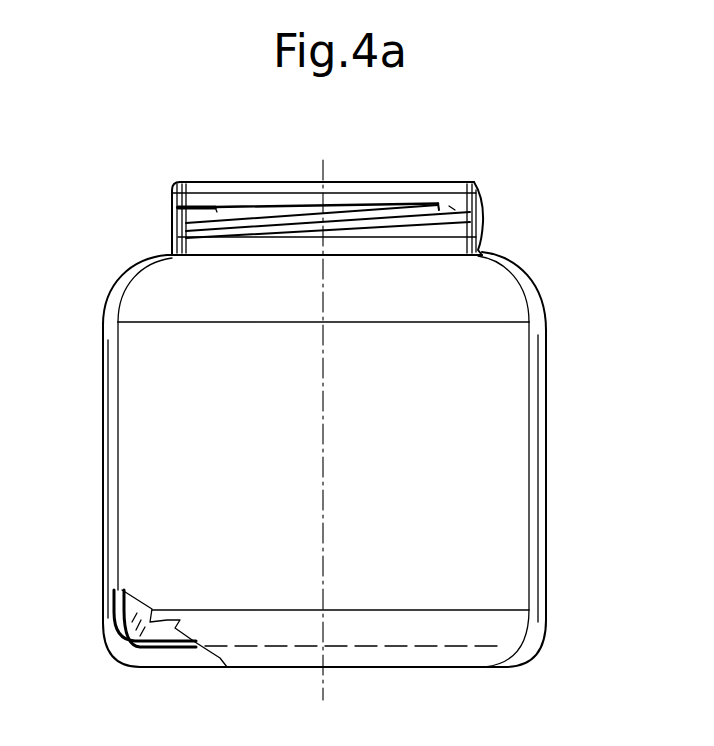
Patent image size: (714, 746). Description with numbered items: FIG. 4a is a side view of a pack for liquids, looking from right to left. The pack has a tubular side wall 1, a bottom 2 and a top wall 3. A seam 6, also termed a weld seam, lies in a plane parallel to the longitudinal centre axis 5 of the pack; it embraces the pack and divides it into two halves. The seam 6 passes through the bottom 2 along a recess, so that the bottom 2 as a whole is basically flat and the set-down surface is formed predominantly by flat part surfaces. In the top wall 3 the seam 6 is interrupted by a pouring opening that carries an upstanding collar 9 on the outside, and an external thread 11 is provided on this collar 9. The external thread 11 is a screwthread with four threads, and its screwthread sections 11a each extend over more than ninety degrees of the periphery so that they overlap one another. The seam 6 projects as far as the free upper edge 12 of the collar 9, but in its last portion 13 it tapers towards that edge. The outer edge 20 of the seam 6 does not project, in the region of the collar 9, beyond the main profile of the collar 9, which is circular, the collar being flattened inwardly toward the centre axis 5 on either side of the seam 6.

The side wall 1 is at (497, 510).
The bottom 2 is at (373, 668).
The top wall 3 is at (500, 252).
The longitudinal centre axis 5 is at (327, 168).
The seam 6 is at (120, 638).
The collar 9 is at (477, 186).
The external thread 11 is at (208, 181).
The screwthread section 11a is at (443, 180).
The free upper edge 12 is at (263, 181).
The last portion 13 is at (173, 195).
The outer edge 20 is at (168, 215).